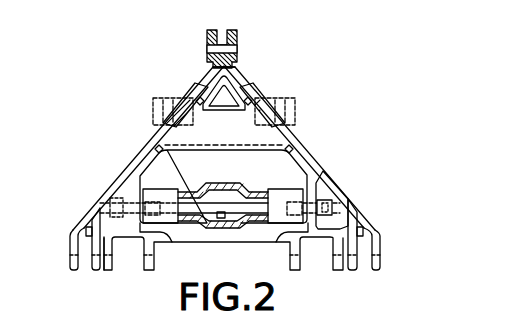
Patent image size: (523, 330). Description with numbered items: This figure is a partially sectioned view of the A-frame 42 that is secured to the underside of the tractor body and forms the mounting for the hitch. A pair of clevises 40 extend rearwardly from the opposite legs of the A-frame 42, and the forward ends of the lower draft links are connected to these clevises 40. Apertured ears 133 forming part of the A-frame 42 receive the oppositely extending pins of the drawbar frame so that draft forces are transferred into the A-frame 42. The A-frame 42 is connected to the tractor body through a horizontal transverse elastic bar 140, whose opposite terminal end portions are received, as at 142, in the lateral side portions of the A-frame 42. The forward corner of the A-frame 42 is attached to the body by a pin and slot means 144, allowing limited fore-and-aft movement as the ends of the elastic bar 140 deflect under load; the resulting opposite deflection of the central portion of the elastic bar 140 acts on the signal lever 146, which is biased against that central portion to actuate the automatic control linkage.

The clevises 40 is at (70, 245).
The A-frame 42 is at (309, 152).
The apertured ears 133 is at (153, 112).
The elastic bar 140 is at (190, 207).
The terminal end portions 142 is at (110, 205).
The pin and slot means 144 is at (238, 47).
The signal lever 146 is at (221, 219).